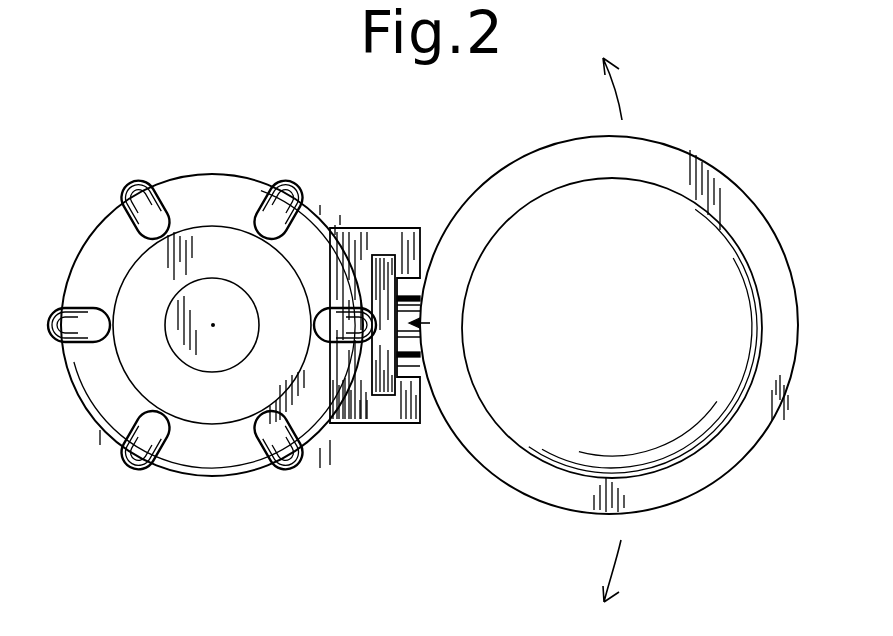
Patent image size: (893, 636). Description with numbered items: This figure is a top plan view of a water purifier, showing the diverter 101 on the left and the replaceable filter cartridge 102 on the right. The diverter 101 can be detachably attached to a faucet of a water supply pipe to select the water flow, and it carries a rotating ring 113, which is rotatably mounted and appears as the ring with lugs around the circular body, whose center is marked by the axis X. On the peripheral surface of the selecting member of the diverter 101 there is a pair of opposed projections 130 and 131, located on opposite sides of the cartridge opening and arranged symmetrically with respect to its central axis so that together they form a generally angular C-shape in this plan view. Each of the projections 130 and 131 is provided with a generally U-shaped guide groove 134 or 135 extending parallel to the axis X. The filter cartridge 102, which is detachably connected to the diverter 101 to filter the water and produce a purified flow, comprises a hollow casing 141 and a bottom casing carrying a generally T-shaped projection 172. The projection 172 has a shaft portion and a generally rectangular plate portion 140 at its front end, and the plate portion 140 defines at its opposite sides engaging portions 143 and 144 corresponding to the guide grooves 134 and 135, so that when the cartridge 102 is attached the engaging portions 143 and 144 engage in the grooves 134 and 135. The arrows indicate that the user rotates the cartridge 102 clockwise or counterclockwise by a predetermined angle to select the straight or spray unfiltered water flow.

The diverter 101 is at (208, 279).
The replaceable filter cartridge 102 is at (609, 330).
The rotating ring 113 is at (96, 236).
The projection 130 is at (409, 317).
The projection 131 is at (375, 416).
The guide groove 134 is at (378, 262).
The guide groove 135 is at (372, 382).
The plate portion 140 is at (444, 306).
The hollow casing 141 is at (556, 508).
The engaging portion 143 is at (403, 283).
The engaging portion 144 is at (419, 388).
The T-shaped projection 172 is at (429, 323).